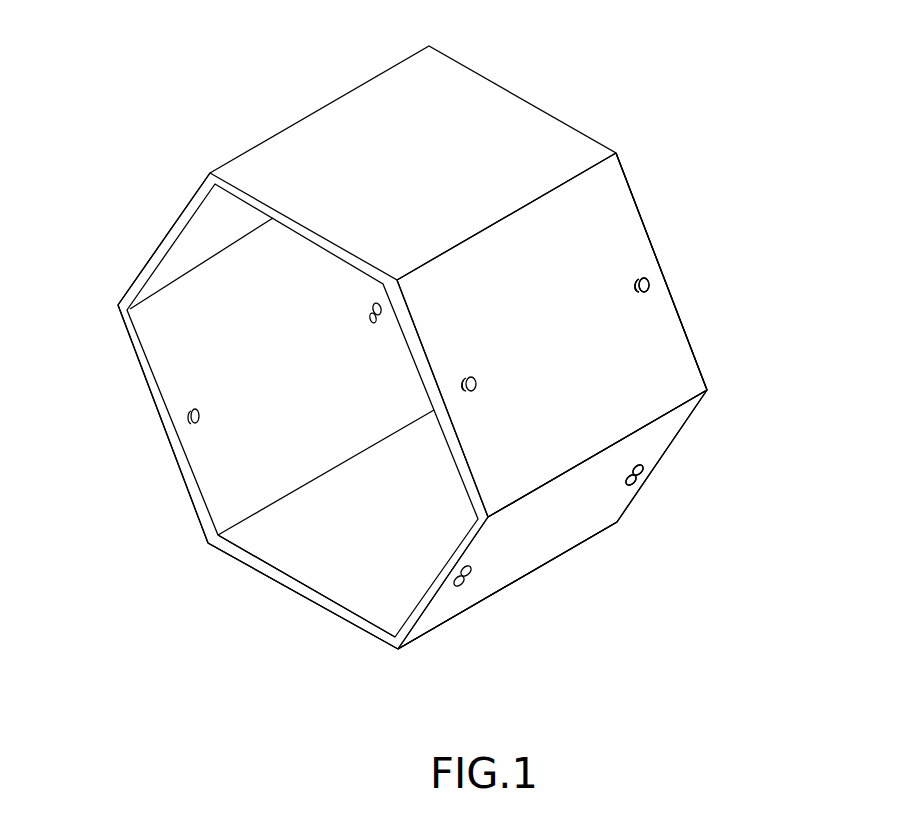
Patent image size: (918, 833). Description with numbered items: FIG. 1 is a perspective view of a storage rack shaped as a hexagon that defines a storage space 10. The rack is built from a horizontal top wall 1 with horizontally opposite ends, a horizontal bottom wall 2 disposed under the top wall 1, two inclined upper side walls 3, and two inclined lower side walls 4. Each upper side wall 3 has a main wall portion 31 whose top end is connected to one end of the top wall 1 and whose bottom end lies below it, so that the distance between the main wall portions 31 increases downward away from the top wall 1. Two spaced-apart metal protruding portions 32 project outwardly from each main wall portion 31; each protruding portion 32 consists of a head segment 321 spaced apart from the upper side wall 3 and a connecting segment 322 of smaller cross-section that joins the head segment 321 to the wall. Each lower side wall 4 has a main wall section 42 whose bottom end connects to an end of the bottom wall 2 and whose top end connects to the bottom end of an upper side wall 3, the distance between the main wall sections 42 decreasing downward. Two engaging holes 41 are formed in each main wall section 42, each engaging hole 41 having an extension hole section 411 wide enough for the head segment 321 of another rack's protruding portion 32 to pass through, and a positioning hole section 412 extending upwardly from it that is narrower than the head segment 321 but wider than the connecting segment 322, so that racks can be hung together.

The top wall 1 is at (468, 110).
The storage space 10 is at (302, 544).
The bottom wall 2 is at (380, 577).
The upper side wall 3 is at (612, 197).
The main wall portion 31 is at (632, 217).
The protruding portion 32 is at (478, 383).
The head segment 321 is at (652, 283).
The connecting segment 322 is at (636, 283).
The lower side wall 4 is at (562, 559).
The engaging hole 41 is at (368, 320).
The extension hole section 411 is at (640, 483).
The positioning hole section 412 is at (645, 469).
The main wall section 42 is at (593, 522).